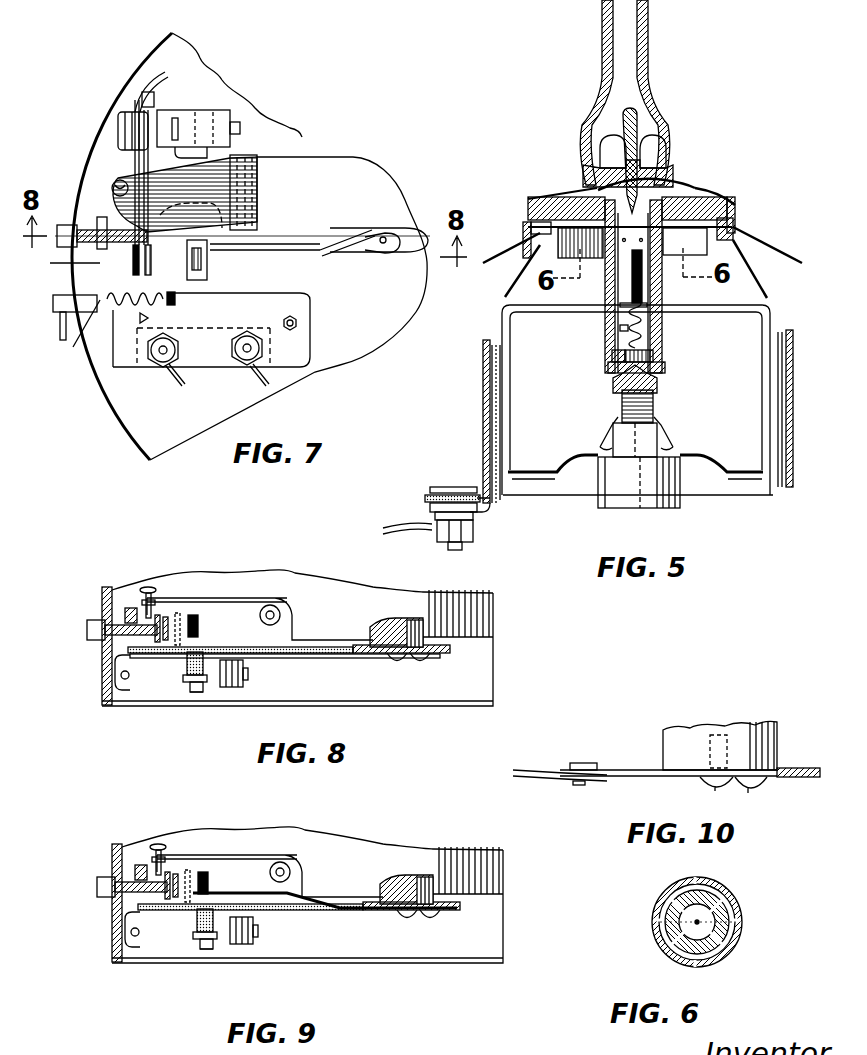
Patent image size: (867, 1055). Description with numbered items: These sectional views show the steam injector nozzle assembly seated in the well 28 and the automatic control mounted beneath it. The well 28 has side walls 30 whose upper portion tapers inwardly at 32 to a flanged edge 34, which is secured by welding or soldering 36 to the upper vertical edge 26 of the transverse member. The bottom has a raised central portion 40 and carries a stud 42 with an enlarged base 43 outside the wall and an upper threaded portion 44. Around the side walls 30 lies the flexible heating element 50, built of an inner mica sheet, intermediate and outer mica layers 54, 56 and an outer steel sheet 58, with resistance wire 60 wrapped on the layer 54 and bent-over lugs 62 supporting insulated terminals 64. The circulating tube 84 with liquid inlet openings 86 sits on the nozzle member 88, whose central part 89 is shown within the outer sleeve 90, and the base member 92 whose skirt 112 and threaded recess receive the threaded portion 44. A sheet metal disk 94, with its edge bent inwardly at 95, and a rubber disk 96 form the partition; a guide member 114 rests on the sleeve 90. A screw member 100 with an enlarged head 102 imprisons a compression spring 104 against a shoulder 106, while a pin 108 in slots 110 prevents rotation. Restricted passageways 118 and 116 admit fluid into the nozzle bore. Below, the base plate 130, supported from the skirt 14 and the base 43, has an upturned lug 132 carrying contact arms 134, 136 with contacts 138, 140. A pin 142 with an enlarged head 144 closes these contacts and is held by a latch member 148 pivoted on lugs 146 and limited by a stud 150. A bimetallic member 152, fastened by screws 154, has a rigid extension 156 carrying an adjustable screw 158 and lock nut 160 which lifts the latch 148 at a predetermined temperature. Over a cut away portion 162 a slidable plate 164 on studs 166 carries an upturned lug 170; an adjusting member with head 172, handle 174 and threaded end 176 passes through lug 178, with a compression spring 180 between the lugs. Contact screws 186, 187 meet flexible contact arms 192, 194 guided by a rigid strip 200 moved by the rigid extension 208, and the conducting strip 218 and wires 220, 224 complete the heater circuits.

In FIG. 7, the lower flared cylindrical wall portion 14 is at (133, 447).
In FIG. 8, the lower flared cylindrical wall portion 14 is at (107, 600).
In FIG. 9, the lower flared cylindrical wall portion 14 is at (118, 942).
In FIG. 5, the upper vertical edge 26 is at (523, 232).
In FIG. 5, the well 28 is at (795, 362).
In FIG. 5, the side walls 30 is at (770, 315).
In FIG. 5, the inwardly tapered upper portion 32 is at (745, 302).
In FIG. 5, the flanged upper edge 34 is at (528, 210).
In FIG. 5, the welding or soldering 36 is at (540, 245).
In FIG. 5, the raised central portion 40 is at (572, 461).
In FIG. 5, the stud 42 is at (650, 440).
In FIG. 5, the enlarged base portion 43 is at (675, 497).
In FIG. 10, the enlarged base portion 43 is at (745, 735).
In FIG. 8, the enlarged base portion 43 is at (393, 627).
In FIG. 9, the enlarged base portion 43 is at (402, 883).
In FIG. 5, the upper screw-threaded portion 44 is at (653, 413).
In FIG. 5, the flexible heating element 50 is at (477, 365).
In FIG. 8, the flexible heating element 50 is at (499, 626).
In FIG. 9, the flexible heating element 50 is at (513, 872).
In FIG. 5, the intermediate layer of insulating material 54 is at (492, 381).
In FIG. 5, the outer layer of insulating material 56 is at (496, 394).
In FIG. 5, the outer layer of sheet steel 58 is at (500, 410).
In FIG. 5, the resistance wire 60 is at (492, 510).
In FIG. 5, the bent-over lugs 62 is at (425, 498).
In FIG. 5, the insulated terminals 64 is at (462, 545).
In FIG. 5, the circulating tube 84 is at (652, 22).
In FIG. 5, the liquid inlet openings 86 is at (656, 136).
In FIG. 5, the nozzle member 88 is at (672, 160).
In FIG. 6, the nozzle member 88 is at (737, 938).
In FIG. 5, the rod 89 is at (634, 110).
In FIG. 5, the outer sleeve 90 is at (663, 295).
In FIG. 6, the outer sleeve 90 is at (740, 930).
In FIG. 5, the base member 92 is at (613, 400).
In FIG. 5, the sheet metal disk 94 is at (712, 190).
In FIG. 5, the inwardly bent edge 95 is at (680, 182).
In FIG. 5, the rubber disk 96 is at (735, 200).
In FIG. 5, the screw member 100 is at (650, 329).
In FIG. 5, the enlarged head 102 is at (620, 306).
In FIG. 5, the compression spring 104 is at (620, 330).
In FIG. 5, the shoulder 106 is at (653, 356).
In FIG. 5, the pin 108 is at (665, 368).
In FIG. 5, the slots 110 is at (612, 356).
In FIG. 5, the skirt 112 is at (606, 445).
In FIG. 5, the guide member 114 is at (733, 228).
In FIG. 5, the restricted passageways 116 is at (612, 245).
In FIG. 6, the restricted passageways 116 is at (667, 938).
In FIG. 5, the restricted passageways 118 is at (661, 240).
In FIG. 6, the restricted passageways 118 is at (742, 915).
In FIG. 7, the base plate 130 is at (347, 193).
In FIG. 8, the base plate 130 is at (187, 645).
In FIG. 9, the base plate 130 is at (152, 912).
In FIG. 7, the upturned lug 132 is at (127, 121).
In FIG. 7, the contact arm 134 is at (123, 163).
In FIG. 8, the contact arm 134 is at (158, 615).
In FIG. 9, the contact arm 134 is at (168, 872).
In FIG. 7, the contact arm 136 is at (149, 166).
In FIG. 8, the contact arm 136 is at (177, 645).
In FIG. 9, the contact arm 136 is at (187, 870).
In FIG. 7, the contact 138 is at (133, 268).
In FIG. 7, the contact 140 is at (151, 264).
In FIG. 7, the pin 142 is at (65, 226).
In FIG. 8, the pin 142 is at (105, 640).
In FIG. 9, the pin 142 is at (118, 903).
In FIG. 8, the enlarged head 144 is at (165, 617).
In FIG. 9, the enlarged head 144 is at (173, 898).
In FIG. 7, the upturned lugs 146 is at (253, 157).
In FIG. 8, the upturned lugs 146 is at (281, 625).
In FIG. 9, the upturned lugs 146 is at (291, 877).
In FIG. 7, the latch member 148 is at (232, 186).
In FIG. 8, the latch member 148 is at (237, 598).
In FIG. 9, the latch member 148 is at (243, 857).
In FIG. 7, the stud 150 is at (112, 184).
In FIG. 8, the stud 150 is at (148, 587).
In FIG. 9, the stud 150 is at (158, 846).
In FIG. 7, the bimetallic material 152 is at (345, 238).
In FIG. 10, the bimetallic material 152 is at (635, 770).
In FIG. 8, the bimetallic material 152 is at (360, 655).
In FIG. 9, the bimetallic material 152 is at (368, 912).
In FIG. 7, the screws 154 is at (368, 238).
In FIG. 10, the screws 154 is at (705, 782).
In FIG. 8, the screws 154 is at (398, 660).
In FIG. 9, the screws 154 is at (410, 915).
In FIG. 7, the rigid extension 156 is at (262, 250).
In FIG. 10, the rigid extension 156 is at (540, 782).
In FIG. 8, the rigid extension 156 is at (298, 658).
In FIG. 9, the rigid extension 156 is at (243, 889).
In FIG. 7, the adjustable screw 158 is at (180, 200).
In FIG. 8, the adjustable screw 158 is at (200, 625).
In FIG. 9, the adjustable screw 158 is at (207, 872).
In FIG. 8, the lock nut 160 is at (185, 684).
In FIG. 9, the lock nut 160 is at (198, 922).
In FIG. 7, the cut away portion 162 is at (233, 327).
In FIG. 7, the slidable plate 164 is at (290, 348).
In FIG. 7, the studs 166 is at (297, 330).
In FIG. 7, the upturned lug 170 is at (140, 308).
In FIG. 7, the enlarged head 172 is at (58, 295).
In FIG. 7, the handle 174 is at (60, 337).
In FIG. 7, the screw threaded end 176 is at (177, 307).
In FIG. 7, the lug 178 is at (61, 263).
In FIG. 8, the lug 178 is at (128, 608).
In FIG. 9, the lug 178 is at (137, 866).
In FIG. 7, the compression spring 180 is at (90, 337).
In FIG. 7, the adjustable contact screw 186 is at (160, 368).
In FIG. 7, the adjustable contact screw 187 is at (244, 366).
In FIG. 8, the flexible contact arm 192 is at (225, 688).
In FIG. 9, the flexible contact arm 192 is at (235, 940).
In FIG. 8, the flexible contact arm 194 is at (245, 680).
In FIG. 9, the flexible contact arm 194 is at (249, 937).
In FIG. 8, the rigid strip 200 is at (230, 688).
In FIG. 9, the rigid strip 200 is at (242, 940).
In FIG. 7, the rigid extension 208 is at (192, 274).
In FIG. 7, the conducting strip 218 is at (185, 116).
In FIG. 7, the wire 220 is at (183, 386).
In FIG. 7, the wire 224 is at (268, 386).